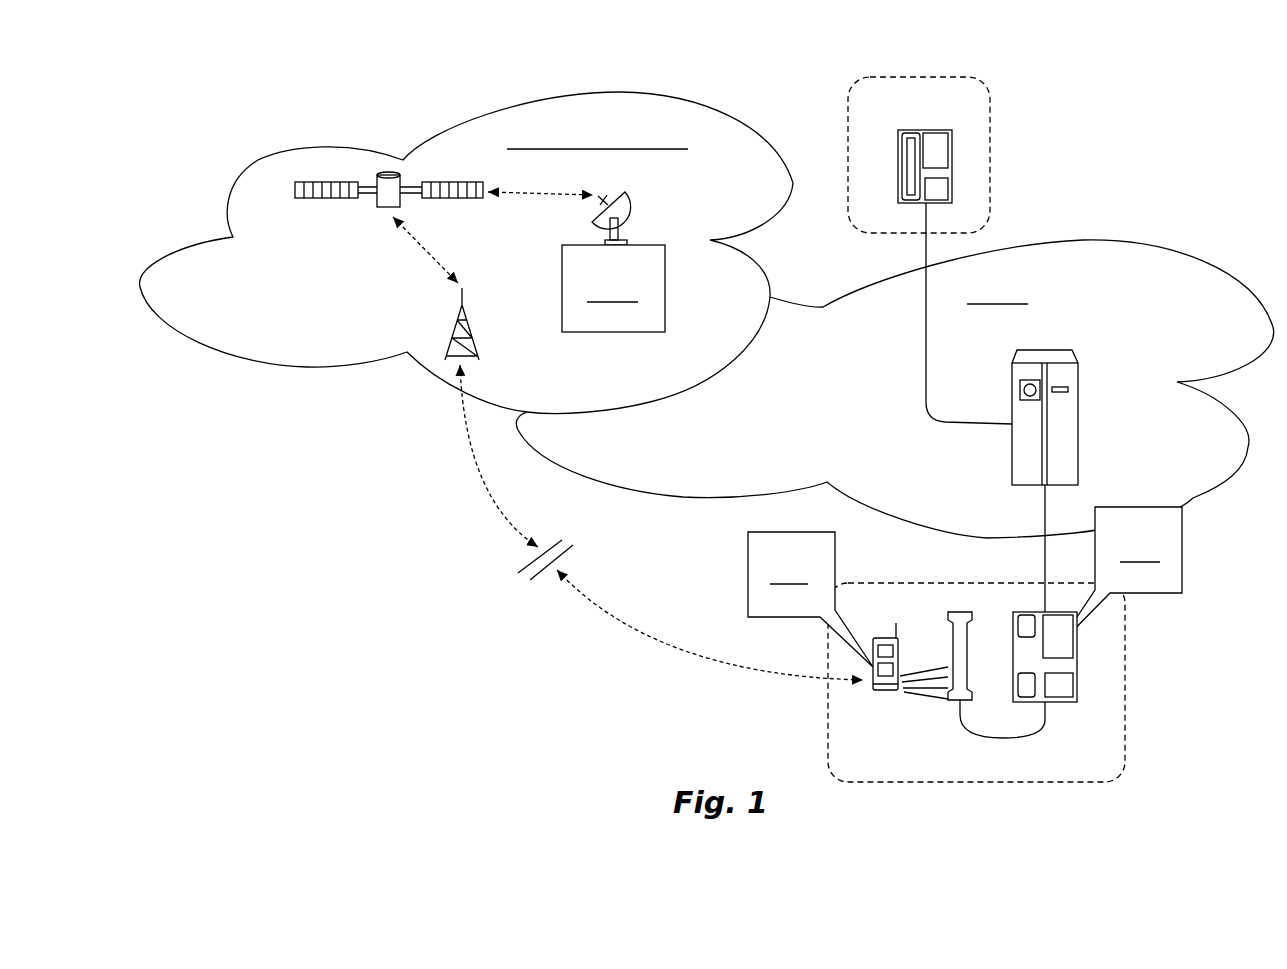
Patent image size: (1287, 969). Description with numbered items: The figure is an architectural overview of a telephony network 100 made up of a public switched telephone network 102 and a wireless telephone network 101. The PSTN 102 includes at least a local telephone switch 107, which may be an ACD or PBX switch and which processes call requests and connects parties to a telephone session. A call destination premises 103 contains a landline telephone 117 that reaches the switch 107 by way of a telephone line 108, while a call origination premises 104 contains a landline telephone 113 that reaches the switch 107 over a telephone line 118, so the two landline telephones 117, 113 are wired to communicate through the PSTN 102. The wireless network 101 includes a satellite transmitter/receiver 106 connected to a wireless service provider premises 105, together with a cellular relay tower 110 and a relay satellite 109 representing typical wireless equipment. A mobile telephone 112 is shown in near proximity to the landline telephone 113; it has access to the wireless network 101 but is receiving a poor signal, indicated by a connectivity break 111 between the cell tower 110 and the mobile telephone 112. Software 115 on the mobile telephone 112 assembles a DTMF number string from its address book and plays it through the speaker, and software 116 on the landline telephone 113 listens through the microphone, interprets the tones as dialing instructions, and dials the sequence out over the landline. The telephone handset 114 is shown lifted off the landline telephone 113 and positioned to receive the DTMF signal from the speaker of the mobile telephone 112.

The telephony network 100 is at (1077, 108).
The wireless telephone network 101 is at (358, 367).
The public switched telephone network 102 is at (1083, 238).
The call destination premises 103 is at (842, 135).
The call origination premises 104 is at (1133, 670).
The wireless service provider premises 105 is at (558, 297).
The satellite transmitter/receiver 106 is at (633, 213).
The local telephone switch 107 is at (1012, 437).
The telephone line 108 is at (926, 378).
The relay satellite 109 is at (378, 208).
The cellular relay tower 110 is at (497, 339).
The connectivity break 111 is at (513, 578).
The mobile telephone 112 is at (880, 703).
The landline telephone 113 is at (1077, 667).
The telephone handset 114 is at (948, 653).
The software 115 is at (748, 595).
The software 116 is at (1182, 567).
The landline telephone 117 is at (912, 130).
The telephone line 118 is at (1045, 508).